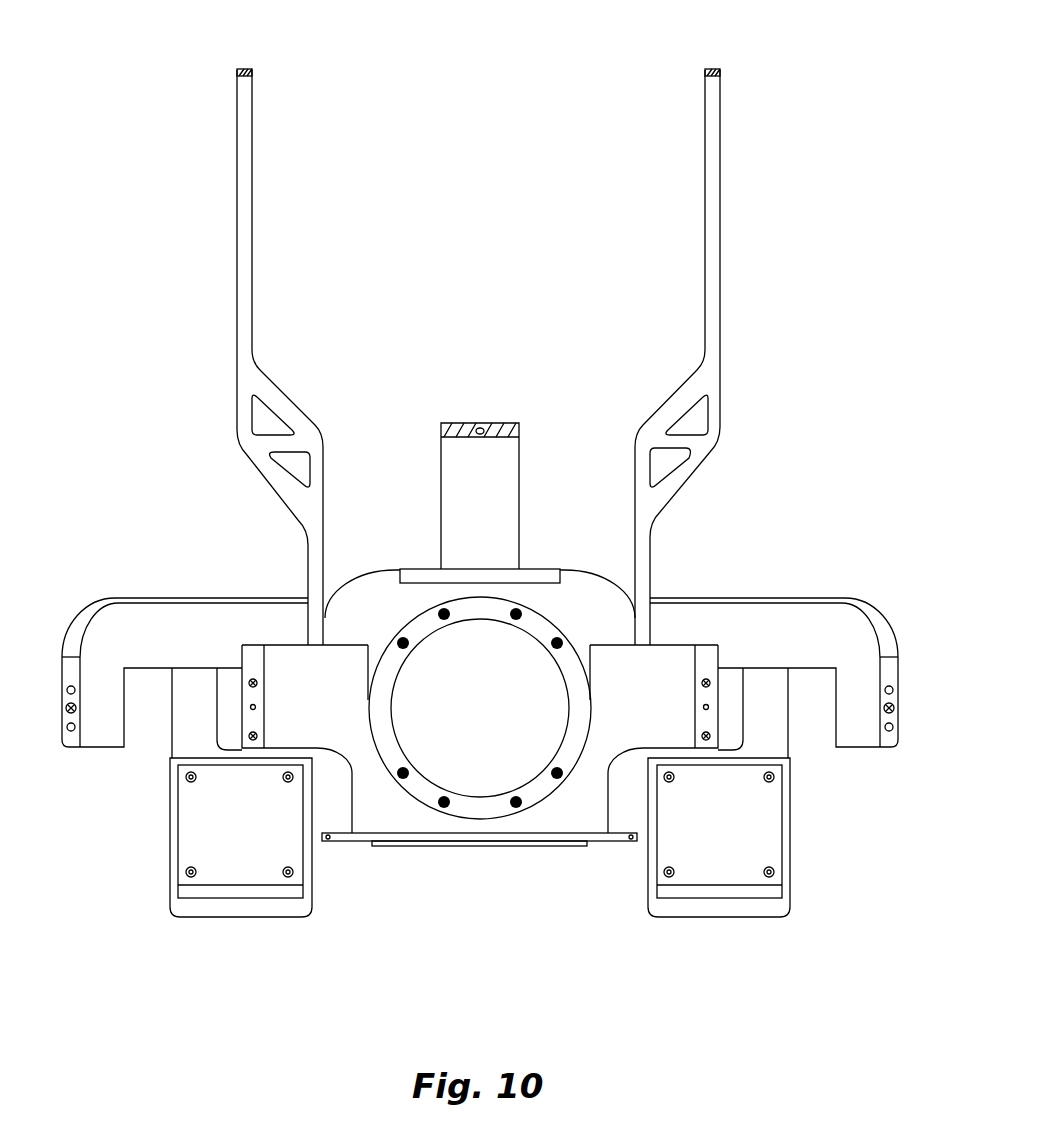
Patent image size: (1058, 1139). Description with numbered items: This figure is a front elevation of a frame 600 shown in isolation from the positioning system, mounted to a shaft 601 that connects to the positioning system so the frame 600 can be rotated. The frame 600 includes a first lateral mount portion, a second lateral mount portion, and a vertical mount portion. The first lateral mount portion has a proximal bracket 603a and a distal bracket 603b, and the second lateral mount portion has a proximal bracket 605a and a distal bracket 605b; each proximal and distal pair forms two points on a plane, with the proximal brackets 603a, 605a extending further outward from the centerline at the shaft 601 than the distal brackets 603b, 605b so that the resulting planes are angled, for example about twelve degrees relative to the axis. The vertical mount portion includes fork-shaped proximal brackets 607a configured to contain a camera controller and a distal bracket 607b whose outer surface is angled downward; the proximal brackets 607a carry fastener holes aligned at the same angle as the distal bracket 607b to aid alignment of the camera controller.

The frame 600 is at (148, 281).
The shaft 601 is at (578, 731).
The proximal bracket 603a is at (892, 673).
The distal bracket 603b is at (707, 683).
The proximal bracket 605a is at (68, 740).
The distal bracket 605b is at (250, 645).
The proximal brackets 607a is at (243, 72).
The distal bracket 607b is at (468, 425).